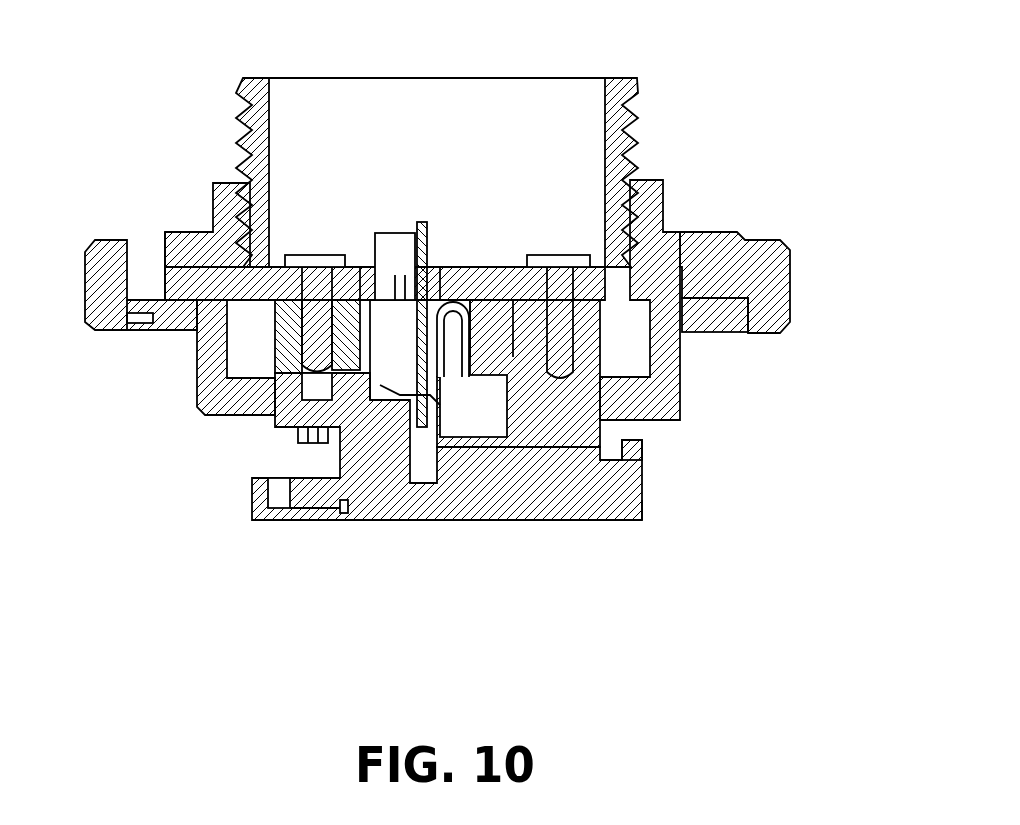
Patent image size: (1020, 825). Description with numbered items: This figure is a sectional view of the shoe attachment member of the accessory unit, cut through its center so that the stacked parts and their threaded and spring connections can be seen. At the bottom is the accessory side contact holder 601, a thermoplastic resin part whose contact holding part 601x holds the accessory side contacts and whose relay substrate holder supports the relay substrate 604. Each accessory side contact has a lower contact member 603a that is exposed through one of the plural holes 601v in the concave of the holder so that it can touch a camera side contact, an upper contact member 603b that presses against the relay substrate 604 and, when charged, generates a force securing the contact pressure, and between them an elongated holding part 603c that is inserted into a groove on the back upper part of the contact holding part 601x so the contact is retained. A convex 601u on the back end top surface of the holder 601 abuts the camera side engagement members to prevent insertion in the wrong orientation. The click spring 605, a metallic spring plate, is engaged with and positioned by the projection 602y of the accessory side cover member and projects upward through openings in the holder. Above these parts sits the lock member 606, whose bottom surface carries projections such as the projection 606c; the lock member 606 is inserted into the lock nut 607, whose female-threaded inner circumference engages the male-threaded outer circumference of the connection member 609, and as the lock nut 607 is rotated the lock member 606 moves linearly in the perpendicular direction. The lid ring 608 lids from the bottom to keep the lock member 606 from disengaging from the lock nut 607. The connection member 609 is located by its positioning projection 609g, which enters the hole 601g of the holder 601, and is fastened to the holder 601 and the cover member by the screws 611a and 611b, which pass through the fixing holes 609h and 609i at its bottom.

The accessory side contact holder 601 is at (642, 495).
The hole 601g is at (645, 508).
The convex 601u is at (628, 447).
The holes 601v is at (341, 514).
The contact holding part 601x is at (258, 527).
The projection 602y is at (430, 370).
The contact member 603a is at (310, 513).
The contact member 603b is at (408, 380).
The holding part 603c is at (485, 325).
The relay substrate 604 is at (420, 222).
The click spring 605 is at (382, 398).
The lock member 606 is at (663, 372).
The projection 606c is at (300, 440).
The lock nut 607 is at (778, 247).
The lid ring 608 is at (722, 322).
The connection member 609 is at (624, 78).
The positioning projection 609g is at (527, 320).
The fixing hole 609h is at (343, 264).
The fixing hole 609i is at (540, 280).
The screw 611a is at (540, 257).
The screw 611b is at (338, 256).